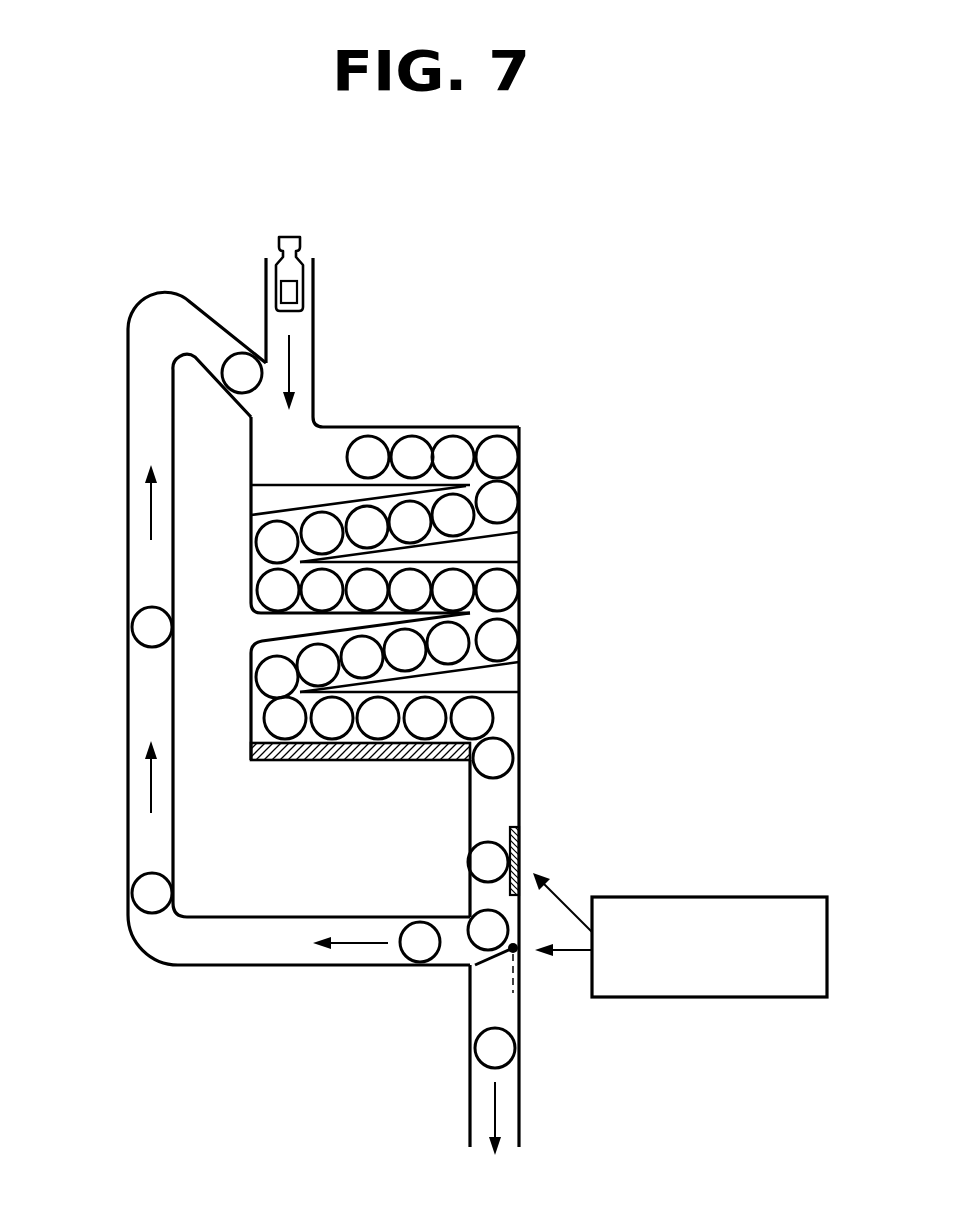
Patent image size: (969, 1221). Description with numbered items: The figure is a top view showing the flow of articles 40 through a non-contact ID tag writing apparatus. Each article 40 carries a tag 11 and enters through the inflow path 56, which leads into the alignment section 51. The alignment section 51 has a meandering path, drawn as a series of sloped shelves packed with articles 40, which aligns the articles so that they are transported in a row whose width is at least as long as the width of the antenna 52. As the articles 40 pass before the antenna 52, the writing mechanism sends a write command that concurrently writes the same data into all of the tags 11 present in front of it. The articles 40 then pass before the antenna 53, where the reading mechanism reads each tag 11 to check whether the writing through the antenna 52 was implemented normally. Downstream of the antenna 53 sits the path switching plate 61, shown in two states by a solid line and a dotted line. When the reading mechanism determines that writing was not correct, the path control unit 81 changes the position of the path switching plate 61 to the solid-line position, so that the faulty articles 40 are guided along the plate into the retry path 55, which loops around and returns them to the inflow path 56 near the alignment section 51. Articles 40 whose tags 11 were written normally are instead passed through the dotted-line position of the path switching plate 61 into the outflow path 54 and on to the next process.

The article 40 is at (289, 238).
The tag 11 is at (297, 292).
The inflow path 56 is at (313, 357).
The alignment section 51 is at (540, 561).
The antenna 52 is at (463, 750).
The antenna 53 is at (521, 857).
The outflow path 54 is at (508, 1108).
The retry path 55 is at (146, 708).
The path switching plate 61 is at (487, 960).
The path control unit 81 is at (712, 897).